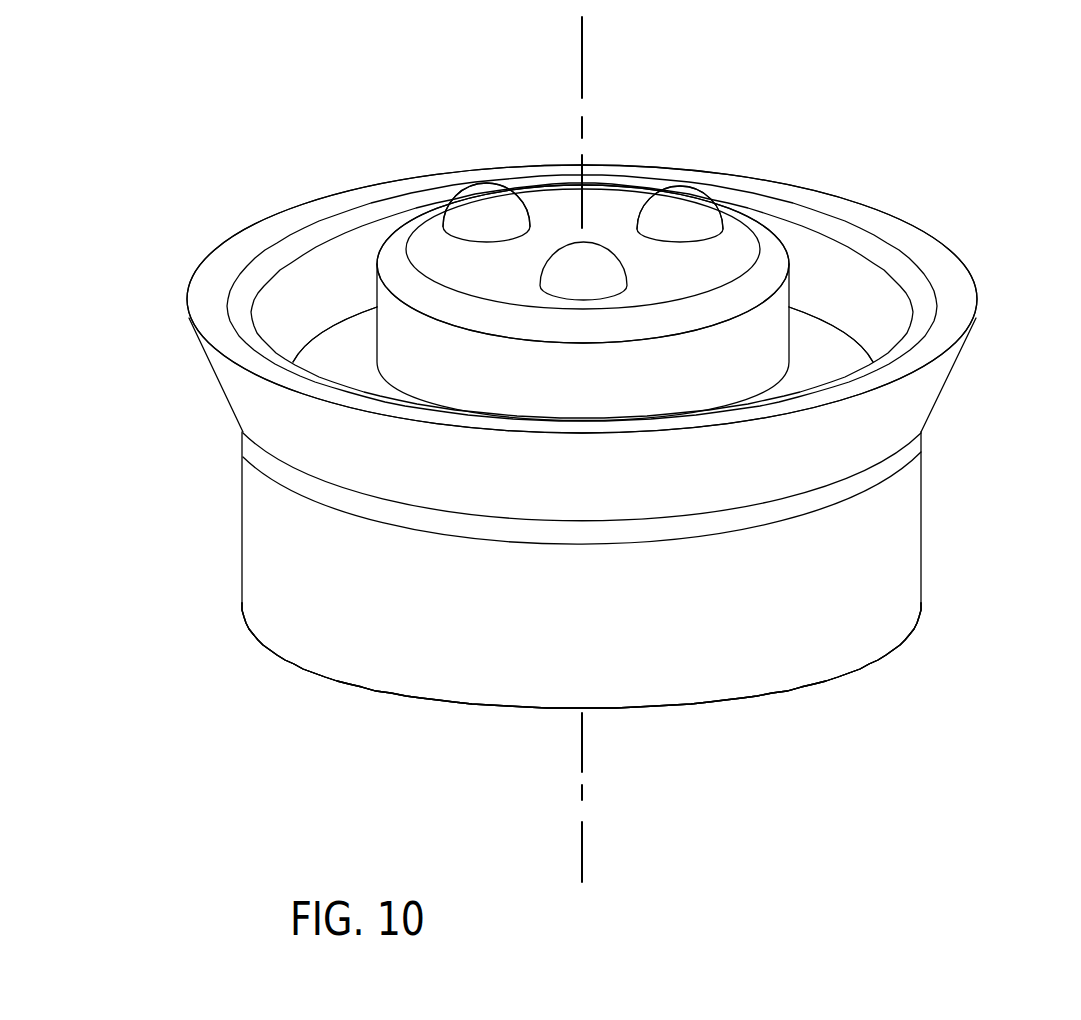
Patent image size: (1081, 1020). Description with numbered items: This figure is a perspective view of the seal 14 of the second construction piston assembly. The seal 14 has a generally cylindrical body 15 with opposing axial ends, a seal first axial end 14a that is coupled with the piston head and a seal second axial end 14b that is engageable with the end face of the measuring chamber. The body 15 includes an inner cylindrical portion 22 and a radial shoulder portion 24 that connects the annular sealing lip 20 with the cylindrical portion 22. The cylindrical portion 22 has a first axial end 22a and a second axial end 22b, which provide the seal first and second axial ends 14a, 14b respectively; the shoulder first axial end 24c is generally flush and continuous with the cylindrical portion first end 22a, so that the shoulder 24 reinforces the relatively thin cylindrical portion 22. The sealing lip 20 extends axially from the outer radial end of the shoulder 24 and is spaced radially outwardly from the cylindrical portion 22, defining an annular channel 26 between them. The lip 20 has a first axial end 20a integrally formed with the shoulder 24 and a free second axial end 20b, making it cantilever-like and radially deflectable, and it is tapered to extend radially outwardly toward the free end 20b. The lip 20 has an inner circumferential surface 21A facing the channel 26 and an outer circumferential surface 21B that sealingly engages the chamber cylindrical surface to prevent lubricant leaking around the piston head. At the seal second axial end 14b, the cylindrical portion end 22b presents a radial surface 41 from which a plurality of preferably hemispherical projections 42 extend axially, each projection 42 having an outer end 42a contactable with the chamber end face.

The seal 14 is at (256, 98).
The seal first axial end 14a is at (786, 690).
The seal second axial end 14b is at (741, 234).
The cylindrical body 15 is at (945, 514).
The sealing lip 20 is at (176, 376).
The lip first axial end 20a is at (245, 434).
The lip second axial end 20b is at (190, 316).
The inner circumferential surface 21A is at (902, 330).
The outer circumferential surface 21B is at (925, 383).
The inner cylindrical portion 22 is at (808, 283).
The cylindrical portion first axial end 22a is at (485, 678).
The cylindrical portion second axial end 22b is at (437, 228).
The radial shoulder portion 24 is at (230, 567).
The shoulder first axial end 24c is at (327, 672).
The annular channel 26 is at (872, 308).
The radial surface 41 is at (614, 205).
The projections 42 is at (481, 182).
The projection outer end 42a is at (492, 188).